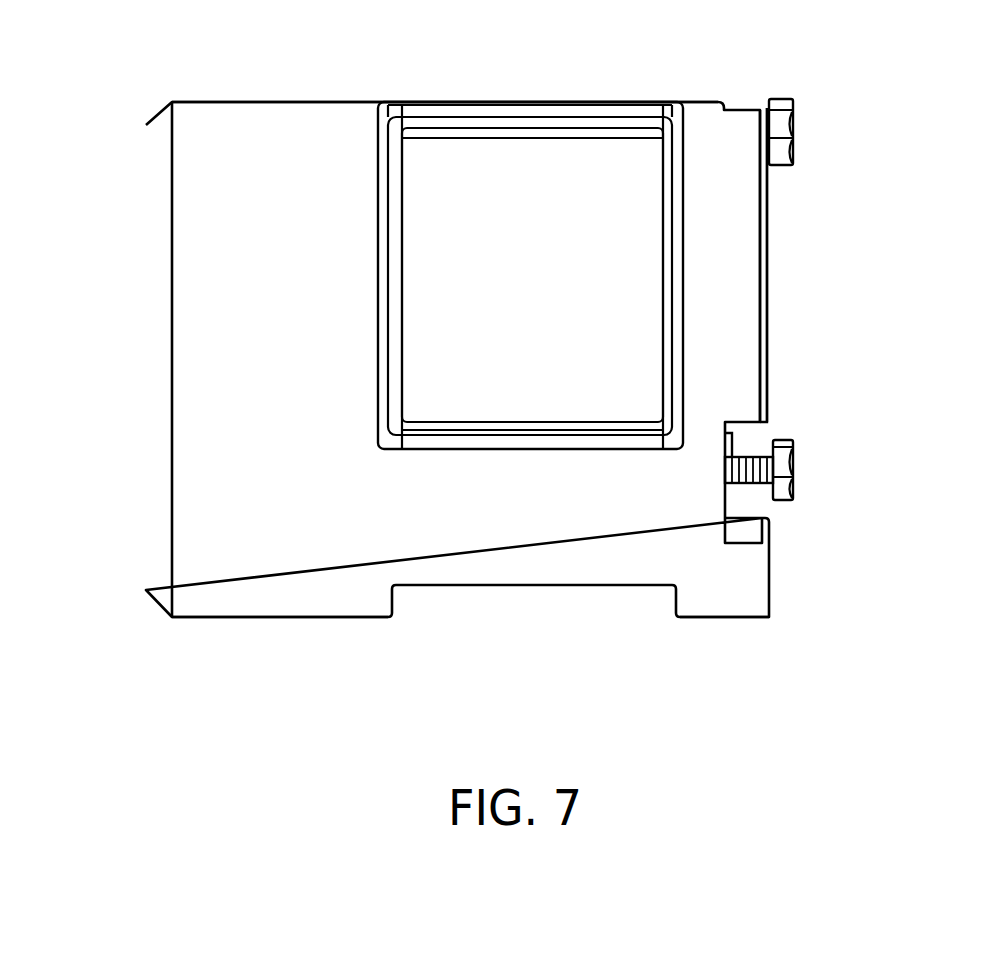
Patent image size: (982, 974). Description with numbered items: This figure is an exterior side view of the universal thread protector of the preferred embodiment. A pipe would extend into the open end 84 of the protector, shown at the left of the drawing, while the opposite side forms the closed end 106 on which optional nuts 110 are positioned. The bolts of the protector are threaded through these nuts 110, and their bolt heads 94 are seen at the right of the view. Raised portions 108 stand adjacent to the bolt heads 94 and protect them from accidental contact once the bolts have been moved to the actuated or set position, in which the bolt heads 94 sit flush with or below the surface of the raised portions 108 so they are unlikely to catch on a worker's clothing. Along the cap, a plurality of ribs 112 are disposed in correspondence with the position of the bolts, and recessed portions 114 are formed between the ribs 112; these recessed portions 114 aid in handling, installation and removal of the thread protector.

The open end 84 is at (108, 242).
The bolt heads 94 is at (794, 110).
The closed end 106 is at (760, 328).
The raised portions 108 is at (767, 246).
The nuts 110 is at (732, 443).
The ribs 112 is at (425, 100).
The recessed portions 114 is at (507, 165).